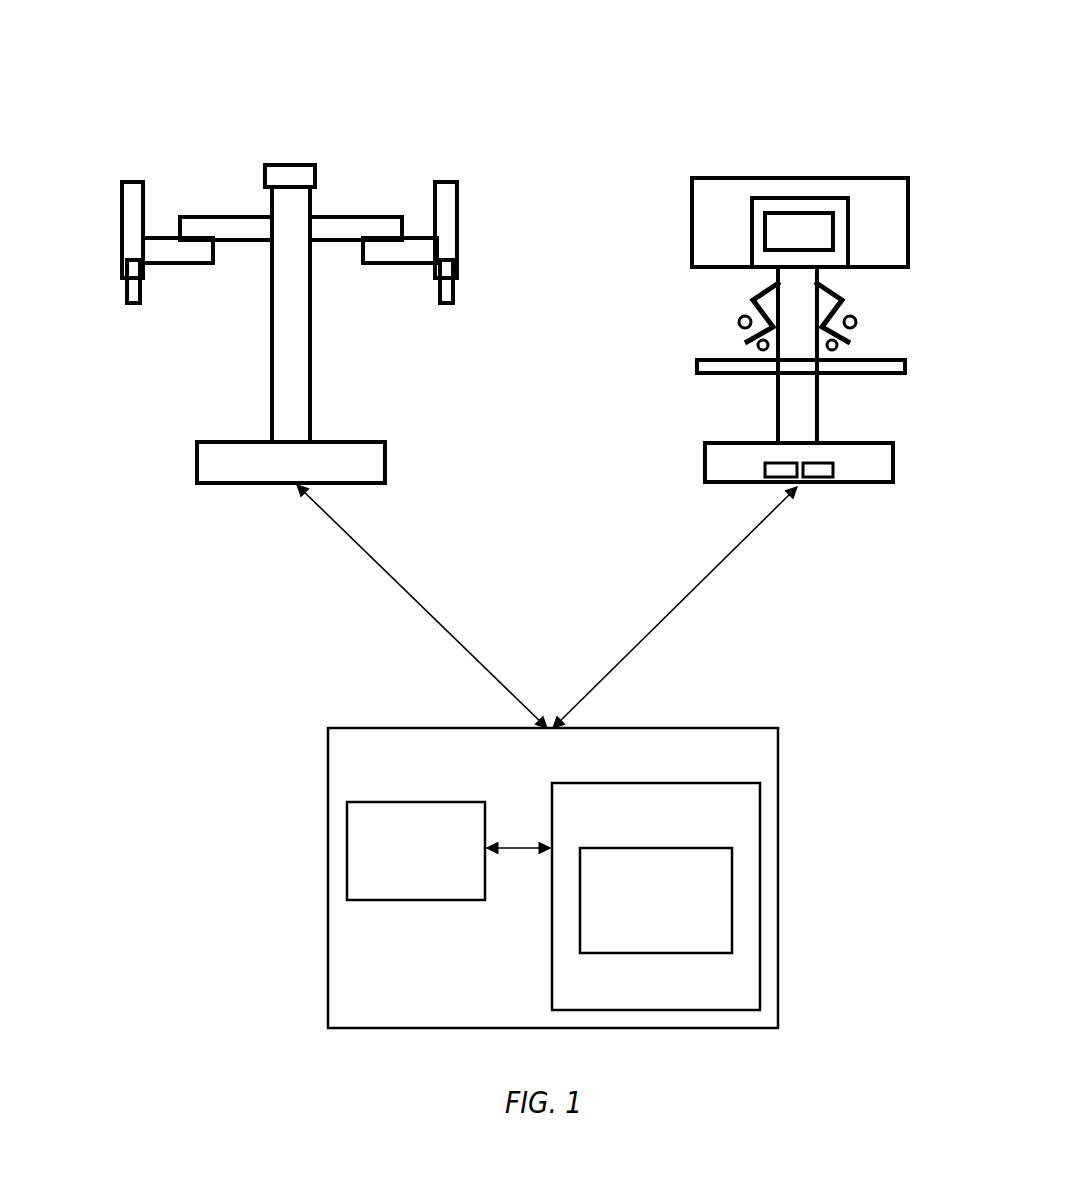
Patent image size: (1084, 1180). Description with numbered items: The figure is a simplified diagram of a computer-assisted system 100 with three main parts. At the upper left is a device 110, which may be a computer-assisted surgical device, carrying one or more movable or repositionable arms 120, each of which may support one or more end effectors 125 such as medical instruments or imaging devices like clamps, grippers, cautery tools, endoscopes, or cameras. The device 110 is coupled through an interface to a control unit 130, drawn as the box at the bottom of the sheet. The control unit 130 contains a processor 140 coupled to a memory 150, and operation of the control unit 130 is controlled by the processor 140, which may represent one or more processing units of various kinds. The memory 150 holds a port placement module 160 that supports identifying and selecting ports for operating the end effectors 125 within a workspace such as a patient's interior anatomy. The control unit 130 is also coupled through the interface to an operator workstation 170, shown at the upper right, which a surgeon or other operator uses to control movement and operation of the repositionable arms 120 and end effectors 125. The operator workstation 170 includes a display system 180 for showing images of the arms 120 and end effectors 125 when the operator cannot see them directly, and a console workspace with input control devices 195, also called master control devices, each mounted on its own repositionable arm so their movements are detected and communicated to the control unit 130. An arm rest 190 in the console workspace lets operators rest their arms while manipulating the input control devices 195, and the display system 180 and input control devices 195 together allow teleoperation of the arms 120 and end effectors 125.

The computer-assisted system 100 is at (196, 51).
The device 110 is at (270, 332).
The repositionable arms 120 is at (122, 210).
The end effectors 125 is at (130, 300).
The control unit 130 is at (553, 878).
The processor 140 is at (416, 851).
The memory 150 is at (656, 896).
The port placement module 160 is at (656, 900).
The operator workstation 170 is at (778, 393).
The display system 180 is at (797, 213).
The arm rest 190 is at (697, 363).
The input control devices 195 is at (738, 342).